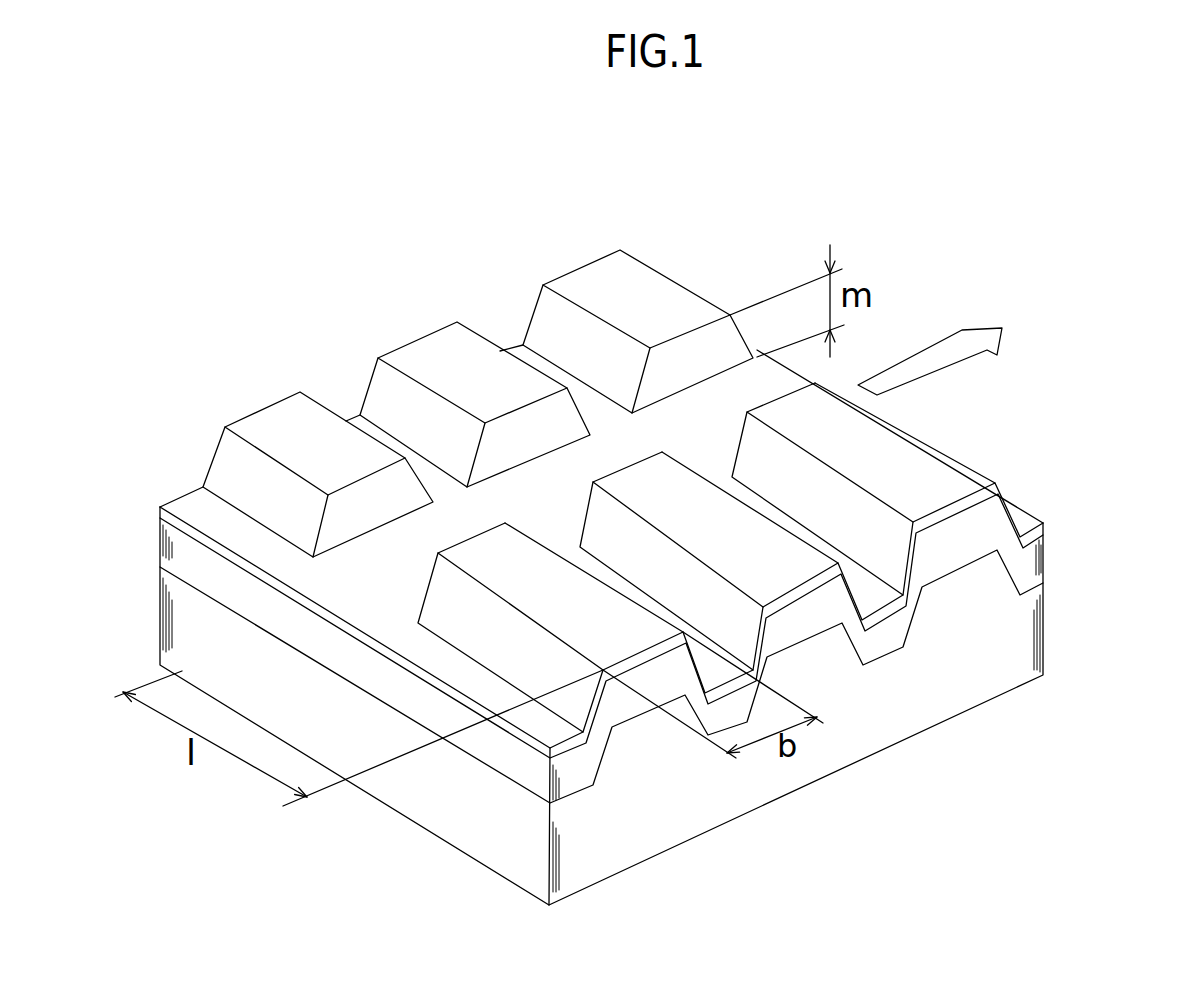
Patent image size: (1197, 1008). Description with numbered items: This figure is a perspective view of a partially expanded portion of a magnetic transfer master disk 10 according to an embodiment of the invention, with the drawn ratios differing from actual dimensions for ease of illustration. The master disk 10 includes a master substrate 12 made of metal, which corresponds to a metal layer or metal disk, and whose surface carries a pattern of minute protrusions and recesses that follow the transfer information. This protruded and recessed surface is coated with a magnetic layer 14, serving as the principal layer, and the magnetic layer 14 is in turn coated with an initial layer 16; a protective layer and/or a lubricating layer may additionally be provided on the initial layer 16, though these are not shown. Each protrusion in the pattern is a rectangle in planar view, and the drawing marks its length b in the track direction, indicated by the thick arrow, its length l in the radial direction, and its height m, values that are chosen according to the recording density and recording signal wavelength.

The magnetic transfer master disk 10 is at (1057, 552).
The master substrate 12 is at (1022, 632).
The magnetic layer 14 is at (975, 522).
The initial layer 16 is at (958, 507).